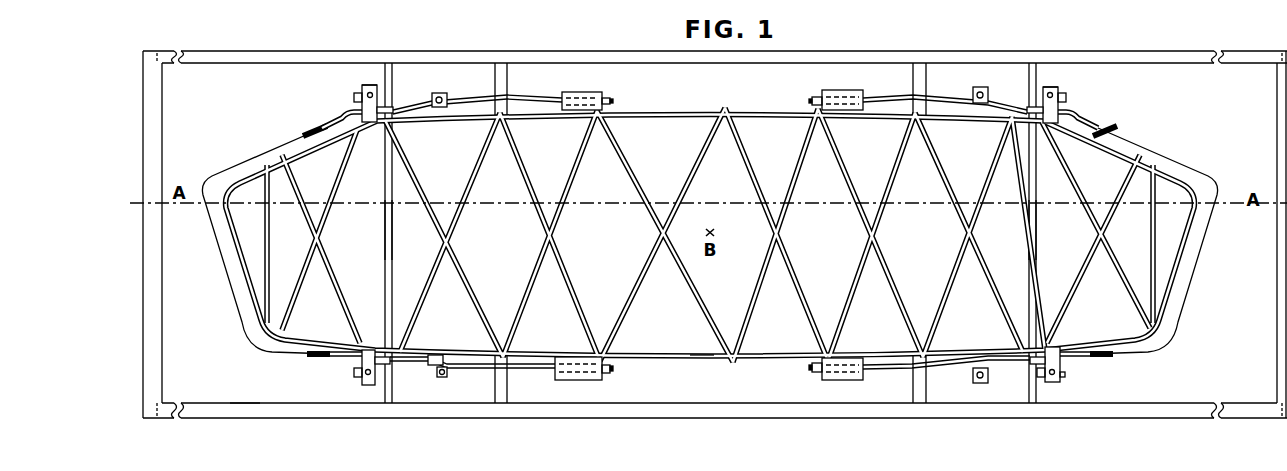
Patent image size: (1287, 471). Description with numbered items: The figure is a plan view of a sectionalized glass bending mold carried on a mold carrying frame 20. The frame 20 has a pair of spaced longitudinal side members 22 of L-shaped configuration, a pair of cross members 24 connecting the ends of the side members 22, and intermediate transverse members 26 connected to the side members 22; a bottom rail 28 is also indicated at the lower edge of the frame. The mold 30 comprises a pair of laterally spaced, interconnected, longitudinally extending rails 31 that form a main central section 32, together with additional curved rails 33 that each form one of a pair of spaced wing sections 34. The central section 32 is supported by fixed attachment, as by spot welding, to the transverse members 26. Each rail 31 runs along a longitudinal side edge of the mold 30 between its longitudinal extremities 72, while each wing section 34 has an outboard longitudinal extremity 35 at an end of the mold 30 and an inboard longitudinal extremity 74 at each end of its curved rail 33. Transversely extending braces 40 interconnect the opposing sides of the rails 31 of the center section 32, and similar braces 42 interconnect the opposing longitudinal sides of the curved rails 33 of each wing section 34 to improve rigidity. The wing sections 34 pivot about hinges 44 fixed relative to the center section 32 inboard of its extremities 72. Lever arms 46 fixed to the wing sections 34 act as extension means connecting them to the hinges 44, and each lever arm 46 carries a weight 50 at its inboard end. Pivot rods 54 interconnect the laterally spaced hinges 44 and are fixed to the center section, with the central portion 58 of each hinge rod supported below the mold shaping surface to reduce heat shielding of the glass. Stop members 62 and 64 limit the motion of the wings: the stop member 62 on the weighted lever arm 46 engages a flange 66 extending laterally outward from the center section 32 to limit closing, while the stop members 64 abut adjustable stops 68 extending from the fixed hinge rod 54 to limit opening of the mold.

The mold carrying frame 20 is at (709, 238).
The longitudinal side members 22 is at (740, 62).
The cross members 24 is at (162, 148).
The intermediate transverse members 26 is at (508, 80).
The bottom rail 28 is at (238, 403).
The mold 30 is at (712, 235).
The longitudinally extending rails 31 is at (640, 119).
The main central section 32 is at (702, 352).
The curved rails 33 is at (226, 260).
The wing sections 34 is at (703, 235).
The outboard longitudinal extremity 35 is at (222, 192).
The transversely extending braces 40 is at (567, 188).
The braces 42 is at (302, 196).
The hinges 44 is at (390, 364).
The lever arms 46 is at (463, 104).
The weight 50 is at (594, 93).
The pivot rods 54 is at (388, 80).
The central portion of the hinge rod 58 is at (383, 238).
The stop member 62 is at (437, 372).
The stop members 64 is at (365, 88).
The flange 66 is at (447, 357).
The adjustable stops 68 is at (354, 97).
The longitudinal extremities 72 is at (380, 128).
The inboard longitudinal extremity 74 is at (367, 130).